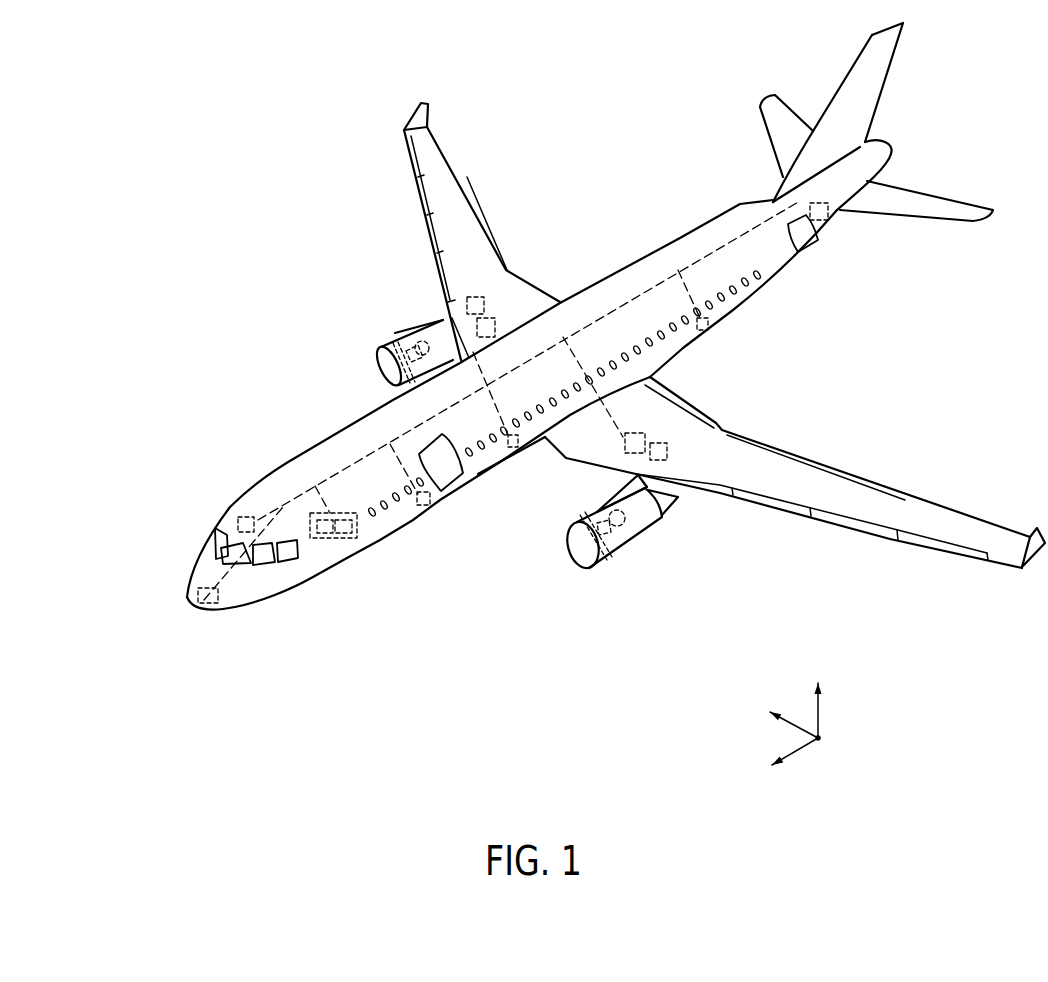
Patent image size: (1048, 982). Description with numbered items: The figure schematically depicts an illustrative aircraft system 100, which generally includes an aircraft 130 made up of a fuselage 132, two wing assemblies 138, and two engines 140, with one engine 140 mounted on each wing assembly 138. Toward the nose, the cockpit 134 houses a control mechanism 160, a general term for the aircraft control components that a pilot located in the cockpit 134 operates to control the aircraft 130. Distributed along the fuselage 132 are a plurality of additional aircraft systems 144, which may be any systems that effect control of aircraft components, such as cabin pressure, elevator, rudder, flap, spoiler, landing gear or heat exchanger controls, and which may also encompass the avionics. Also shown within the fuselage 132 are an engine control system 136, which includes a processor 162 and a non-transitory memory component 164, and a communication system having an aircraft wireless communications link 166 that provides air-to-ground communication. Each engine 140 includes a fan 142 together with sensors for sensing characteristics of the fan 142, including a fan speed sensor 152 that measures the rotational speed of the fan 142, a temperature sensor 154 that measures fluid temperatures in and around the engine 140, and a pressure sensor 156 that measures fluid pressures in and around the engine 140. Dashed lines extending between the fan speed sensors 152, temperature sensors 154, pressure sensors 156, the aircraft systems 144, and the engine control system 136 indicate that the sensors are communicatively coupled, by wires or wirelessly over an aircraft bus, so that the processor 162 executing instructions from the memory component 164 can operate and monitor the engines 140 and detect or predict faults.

The aircraft system 100 is at (260, 187).
The aircraft 130 is at (183, 563).
The fuselage 132 is at (638, 253).
The cockpit 134 is at (223, 523).
The engine control system 136 is at (345, 515).
The wing assembly 138 is at (428, 155).
The engine 140 is at (372, 374).
The fan 142 is at (373, 347).
The additional aircraft systems 144 is at (822, 222).
The fan speed sensor 152 is at (405, 333).
The temperature sensor 154 is at (489, 318).
The pressure sensor 156 is at (472, 297).
The control mechanism 160 is at (243, 516).
The processor 162 is at (357, 537).
The non-transitory memory component 164 is at (327, 538).
The aircraft wireless communications link 166 is at (208, 604).